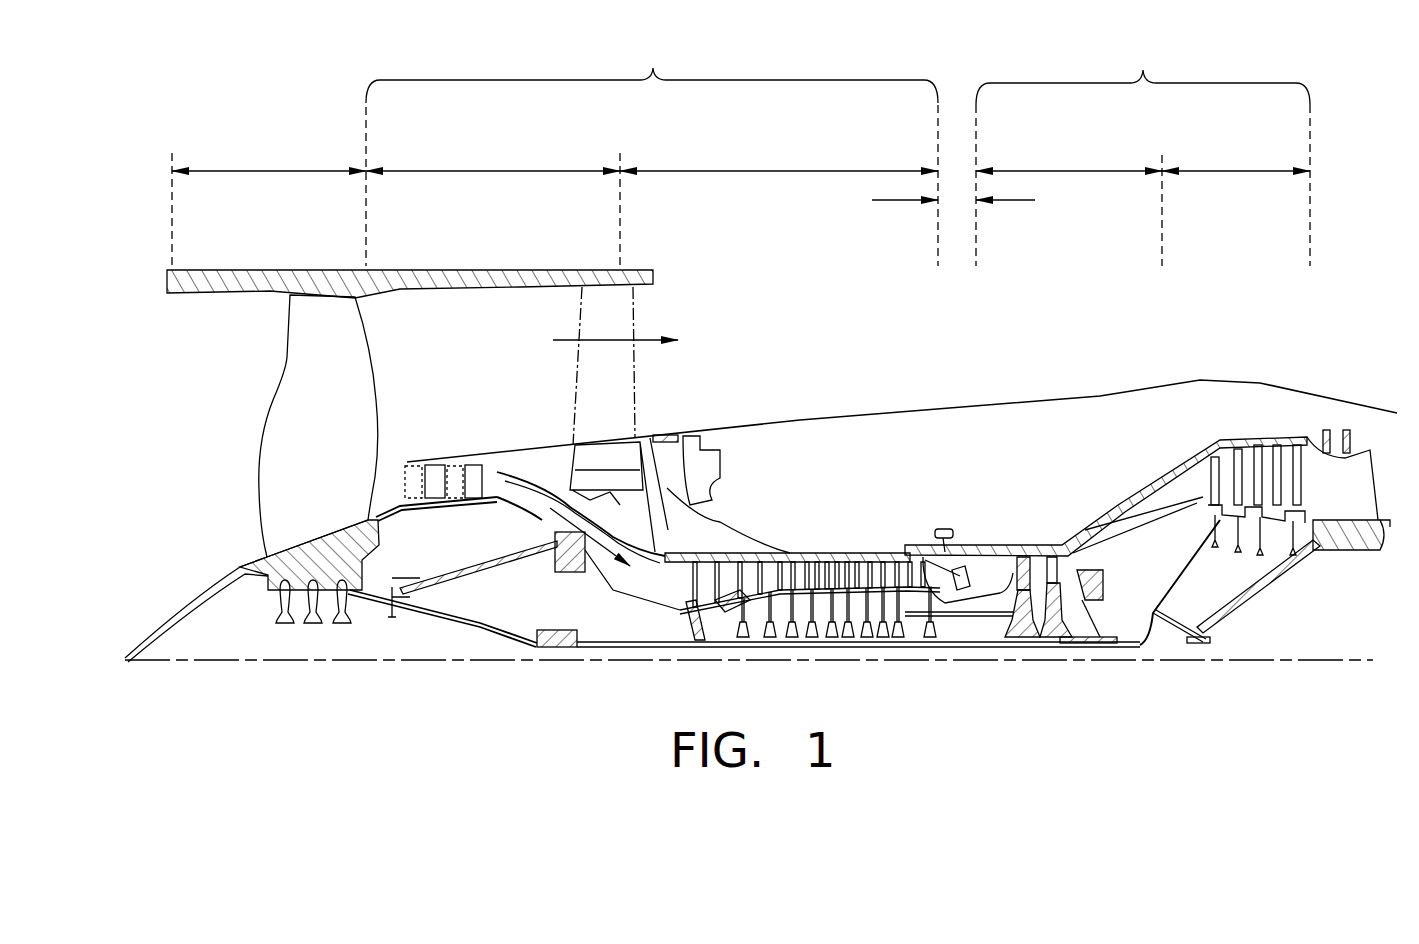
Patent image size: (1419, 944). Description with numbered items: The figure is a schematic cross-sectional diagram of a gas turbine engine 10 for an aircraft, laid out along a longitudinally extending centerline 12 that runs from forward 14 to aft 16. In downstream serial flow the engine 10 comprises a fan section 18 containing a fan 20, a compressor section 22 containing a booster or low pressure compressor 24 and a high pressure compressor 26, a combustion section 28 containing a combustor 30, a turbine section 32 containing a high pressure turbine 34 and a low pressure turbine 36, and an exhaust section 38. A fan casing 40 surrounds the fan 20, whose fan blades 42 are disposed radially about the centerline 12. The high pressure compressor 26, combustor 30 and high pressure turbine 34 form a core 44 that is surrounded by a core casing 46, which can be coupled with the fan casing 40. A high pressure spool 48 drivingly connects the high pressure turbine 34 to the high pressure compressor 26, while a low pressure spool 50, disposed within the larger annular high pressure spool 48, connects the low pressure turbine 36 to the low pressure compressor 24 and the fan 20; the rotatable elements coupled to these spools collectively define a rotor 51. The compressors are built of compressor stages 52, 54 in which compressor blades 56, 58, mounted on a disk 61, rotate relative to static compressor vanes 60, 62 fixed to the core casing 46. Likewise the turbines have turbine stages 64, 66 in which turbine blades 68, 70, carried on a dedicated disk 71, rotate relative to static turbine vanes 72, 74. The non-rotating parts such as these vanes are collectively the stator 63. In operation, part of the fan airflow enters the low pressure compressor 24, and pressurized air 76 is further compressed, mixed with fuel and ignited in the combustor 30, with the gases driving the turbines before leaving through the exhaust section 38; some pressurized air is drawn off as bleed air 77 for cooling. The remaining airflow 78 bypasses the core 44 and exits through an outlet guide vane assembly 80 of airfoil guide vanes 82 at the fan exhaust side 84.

The gas turbine engine 10 is at (1322, 200).
The centerline 12 is at (248, 662).
The forward 14 is at (204, 400).
The aft 16 is at (1410, 493).
The fan section 18 is at (268, 170).
The fan 20 is at (243, 515).
The compressor section 22 is at (655, 66).
The low pressure compressor 24 is at (492, 171).
The high pressure compressor 26 is at (780, 171).
The combustion section 28 is at (887, 201).
The combustor 30 is at (963, 520).
The turbine section 32 is at (1143, 80).
The high pressure turbine 34 is at (1070, 171).
The low pressure turbine 36 is at (1235, 171).
The exhaust section 38 is at (1372, 467).
The fan casing 40 is at (395, 270).
The fan blades 42 is at (337, 334).
The core 44 is at (900, 448).
The core casing 46 is at (1147, 477).
The high pressure spool 48 is at (940, 613).
The low pressure spool 50 is at (557, 645).
The rotor 51 is at (807, 650).
The compressor stages 52 is at (436, 438).
The compressor stages 54 is at (802, 545).
The compressor blades 56 is at (440, 470).
The compressor blades 58 is at (707, 565).
The static compressor vanes 60 is at (417, 467).
The disk 61 is at (435, 513).
The static compressor vanes 62 is at (680, 567).
The stator 63 is at (690, 620).
The turbine stages 64 is at (1040, 541).
The turbine stages 66 is at (1165, 519).
The turbine blades 68 is at (1050, 565).
The turbine blades 70 is at (1297, 443).
The disk 71 is at (1260, 547).
The static turbine vanes 72 is at (1007, 557).
The static turbine vanes 74 is at (1280, 447).
The pressurized air 76 is at (600, 557).
The bleed air 77 is at (827, 515).
The airflow 78 is at (568, 342).
The outlet guide vane assembly 80 is at (645, 402).
The airfoil guide vanes 82 is at (585, 377).
The fan exhaust side 84 is at (653, 322).